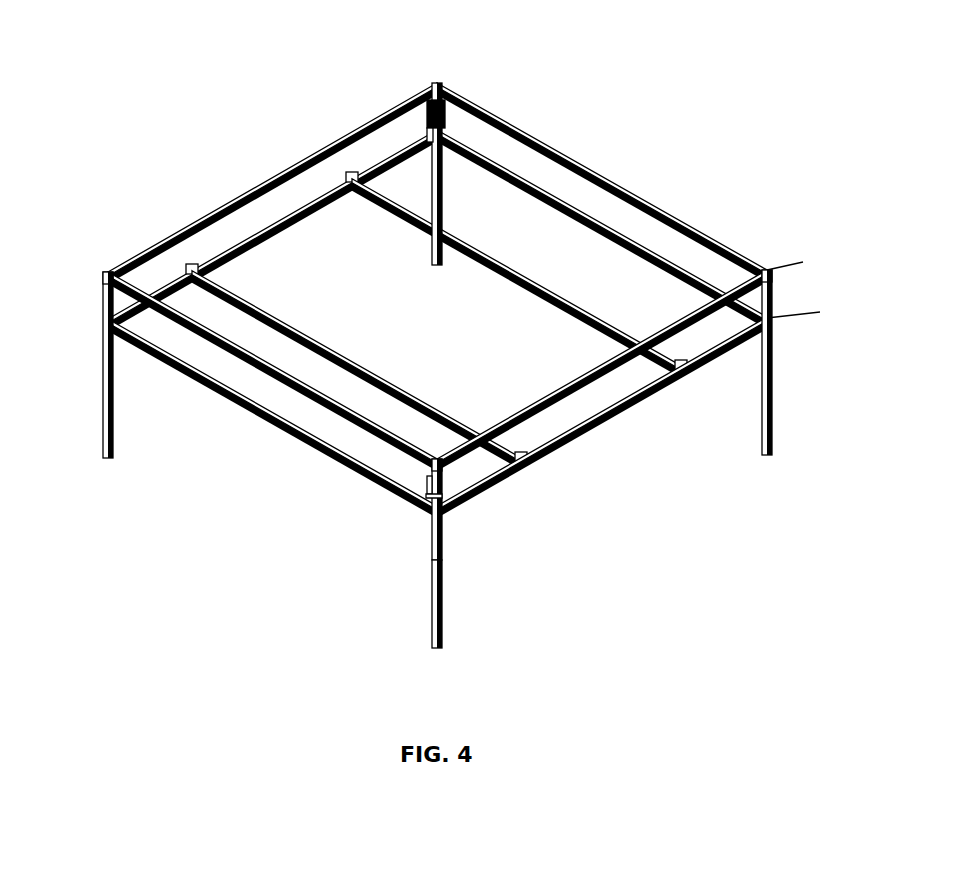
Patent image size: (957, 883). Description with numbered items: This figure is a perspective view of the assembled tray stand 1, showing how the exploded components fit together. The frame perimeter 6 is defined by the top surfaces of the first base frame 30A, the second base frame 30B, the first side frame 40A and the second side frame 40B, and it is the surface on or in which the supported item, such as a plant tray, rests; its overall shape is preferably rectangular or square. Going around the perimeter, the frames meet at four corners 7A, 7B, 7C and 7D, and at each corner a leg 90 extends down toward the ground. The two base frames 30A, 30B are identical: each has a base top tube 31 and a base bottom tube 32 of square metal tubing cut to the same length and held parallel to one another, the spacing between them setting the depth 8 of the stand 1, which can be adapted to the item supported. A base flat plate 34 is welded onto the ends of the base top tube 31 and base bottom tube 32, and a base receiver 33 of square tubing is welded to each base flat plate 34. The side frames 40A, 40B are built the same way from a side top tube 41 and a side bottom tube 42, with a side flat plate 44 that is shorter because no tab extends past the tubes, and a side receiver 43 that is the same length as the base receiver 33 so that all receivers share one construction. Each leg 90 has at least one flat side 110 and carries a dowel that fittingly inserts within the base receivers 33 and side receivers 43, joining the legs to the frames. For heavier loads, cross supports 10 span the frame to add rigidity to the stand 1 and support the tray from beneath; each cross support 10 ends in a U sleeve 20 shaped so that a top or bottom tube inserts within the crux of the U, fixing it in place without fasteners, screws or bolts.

The stand 1 is at (222, 156).
The frame perimeter 6 is at (683, 305).
The corner 7A is at (103, 268).
The corner 7B is at (438, 80).
The corner 7C is at (766, 264).
The corner 7D is at (437, 456).
The depth 8 is at (786, 284).
The cross support 10 is at (297, 316).
The U sleeve 20 is at (527, 470).
The first base frame 30A is at (272, 395).
The second base frame 30B is at (633, 166).
The base top tube 31 is at (226, 350).
The base bottom tube 32 is at (321, 447).
The base receiver 33 is at (432, 492).
The base flat plate 34 is at (446, 118).
The first side frame 40A is at (302, 152).
The second side frame 40B is at (602, 394).
The side top tube 41 is at (582, 372).
The side bottom tube 42 is at (620, 410).
The side receiver 43 is at (430, 484).
The side flat plate 44 is at (452, 198).
The leg 90 is at (98, 362).
The flat side 110 is at (447, 593).